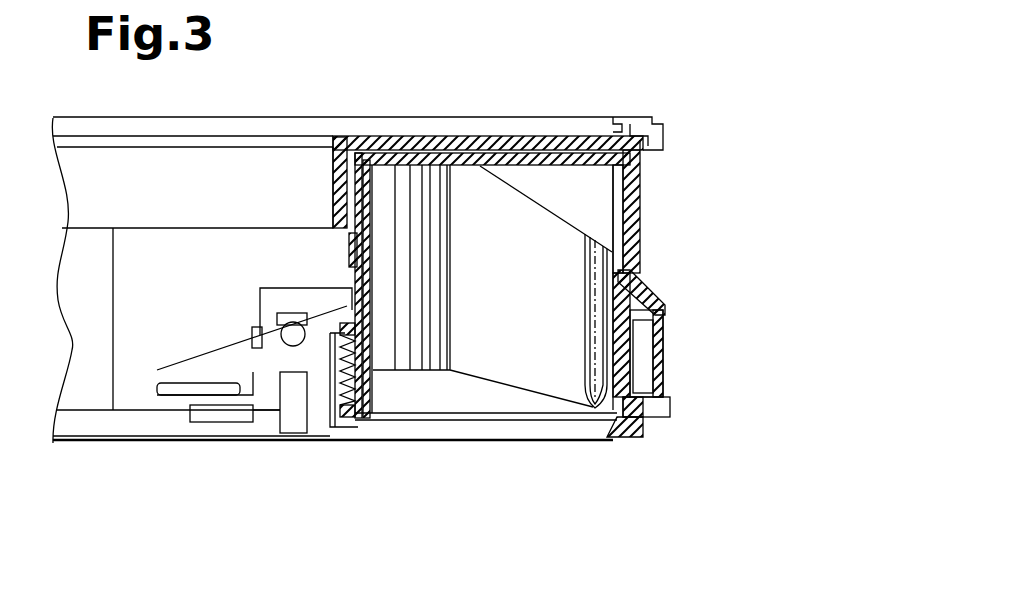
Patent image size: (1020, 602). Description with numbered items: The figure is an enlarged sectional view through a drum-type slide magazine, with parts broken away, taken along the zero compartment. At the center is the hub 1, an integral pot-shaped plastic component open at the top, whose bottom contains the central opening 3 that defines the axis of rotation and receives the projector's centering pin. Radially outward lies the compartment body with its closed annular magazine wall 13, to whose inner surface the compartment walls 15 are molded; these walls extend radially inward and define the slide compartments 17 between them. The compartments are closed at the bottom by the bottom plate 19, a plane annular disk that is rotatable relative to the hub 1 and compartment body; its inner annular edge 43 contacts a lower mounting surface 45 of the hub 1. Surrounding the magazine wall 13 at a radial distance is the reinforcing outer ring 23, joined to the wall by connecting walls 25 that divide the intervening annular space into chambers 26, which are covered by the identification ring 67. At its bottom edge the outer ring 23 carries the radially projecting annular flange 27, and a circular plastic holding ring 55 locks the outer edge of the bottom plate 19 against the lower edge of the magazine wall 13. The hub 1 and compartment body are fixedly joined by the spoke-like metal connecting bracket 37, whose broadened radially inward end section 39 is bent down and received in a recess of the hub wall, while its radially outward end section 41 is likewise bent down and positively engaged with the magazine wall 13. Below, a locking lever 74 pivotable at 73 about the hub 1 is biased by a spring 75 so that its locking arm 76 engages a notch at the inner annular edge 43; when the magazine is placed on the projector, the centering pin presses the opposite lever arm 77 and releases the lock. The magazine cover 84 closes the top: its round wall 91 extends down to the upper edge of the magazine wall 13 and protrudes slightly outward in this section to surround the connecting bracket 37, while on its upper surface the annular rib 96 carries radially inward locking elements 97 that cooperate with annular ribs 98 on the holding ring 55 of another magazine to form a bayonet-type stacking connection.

The hub 1 is at (352, 275).
The opening 3 is at (172, 422).
The annular magazine wall 13 is at (663, 380).
The compartment walls 15 is at (577, 153).
The slide compartments 17 is at (572, 9).
The bottom plate 19 is at (460, 423).
The outer ring 23 is at (667, 353).
The connecting walls 25 is at (495, 0).
The chambers 26 is at (412, 0).
The annular flange 27 is at (670, 407).
The connecting bracket 37 is at (556, 120).
The radially inward end section 39 is at (350, 257).
The radially outward end section 41 is at (640, 183).
The inner annular edge 43 is at (373, 348).
The lower mounting surface 45 is at (310, 380).
The holding ring 55 is at (622, 437).
The identification ring 67 is at (647, 300).
The pivot 73 is at (273, 313).
The locking lever 74 is at (240, 367).
The spring 75 is at (352, 415).
The locking arm 76 is at (270, 417).
The lever arm 77 is at (172, 357).
The magazine cover 84 is at (393, 137).
The round wall 91 is at (640, 213).
The annular rib 96 is at (650, 117).
The locking elements 97 is at (613, 118).
The annular ribs 98 is at (650, 437).